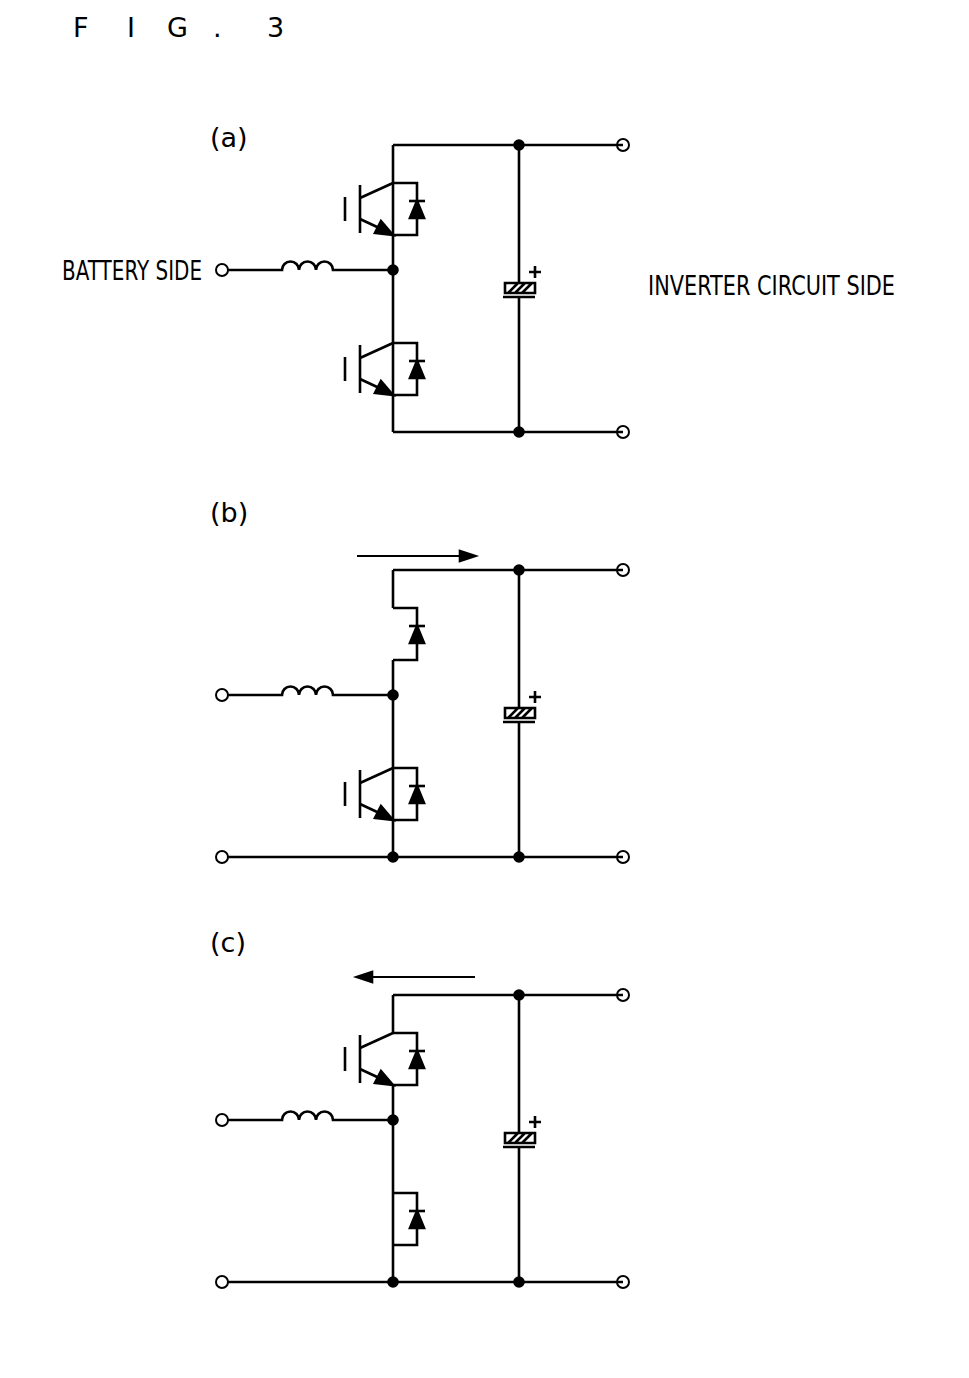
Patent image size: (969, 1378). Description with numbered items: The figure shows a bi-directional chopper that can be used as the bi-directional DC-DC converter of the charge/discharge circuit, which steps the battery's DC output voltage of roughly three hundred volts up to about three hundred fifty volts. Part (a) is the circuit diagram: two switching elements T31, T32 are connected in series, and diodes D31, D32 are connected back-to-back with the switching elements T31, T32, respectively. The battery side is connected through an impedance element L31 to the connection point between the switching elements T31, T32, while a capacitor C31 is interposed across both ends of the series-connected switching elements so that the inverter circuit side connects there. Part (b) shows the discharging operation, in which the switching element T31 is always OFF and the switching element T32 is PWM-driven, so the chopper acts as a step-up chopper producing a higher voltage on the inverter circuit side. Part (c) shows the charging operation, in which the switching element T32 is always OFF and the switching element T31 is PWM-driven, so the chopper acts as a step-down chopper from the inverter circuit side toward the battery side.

The impedance element L31 is at (303, 262).
The switching element T31 is at (382, 187).
The switching element T32 is at (382, 347).
The diode D31 is at (422, 207).
The diode D32 is at (422, 367).
The capacitor C31 is at (532, 291).